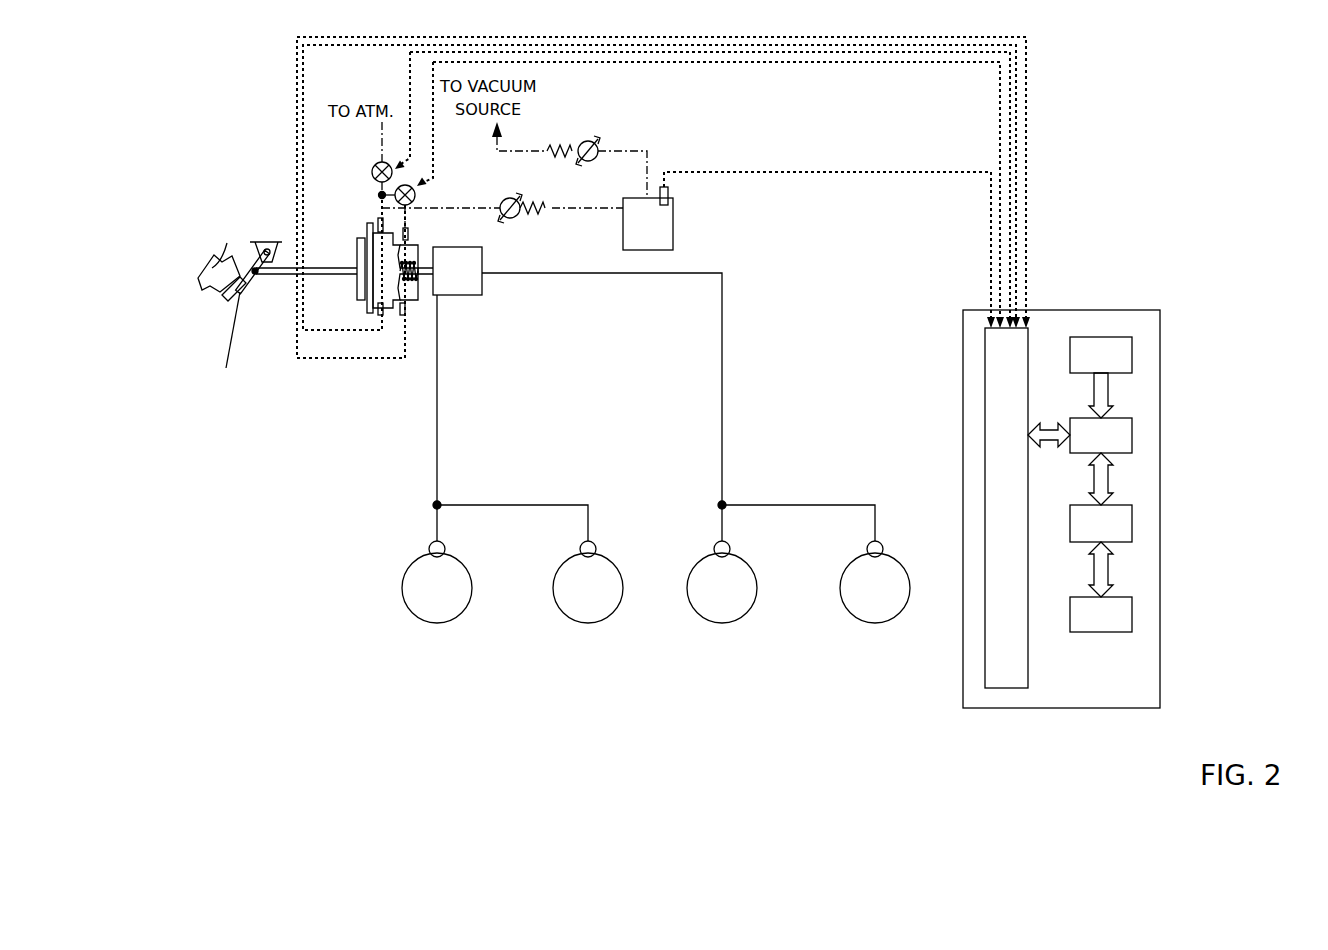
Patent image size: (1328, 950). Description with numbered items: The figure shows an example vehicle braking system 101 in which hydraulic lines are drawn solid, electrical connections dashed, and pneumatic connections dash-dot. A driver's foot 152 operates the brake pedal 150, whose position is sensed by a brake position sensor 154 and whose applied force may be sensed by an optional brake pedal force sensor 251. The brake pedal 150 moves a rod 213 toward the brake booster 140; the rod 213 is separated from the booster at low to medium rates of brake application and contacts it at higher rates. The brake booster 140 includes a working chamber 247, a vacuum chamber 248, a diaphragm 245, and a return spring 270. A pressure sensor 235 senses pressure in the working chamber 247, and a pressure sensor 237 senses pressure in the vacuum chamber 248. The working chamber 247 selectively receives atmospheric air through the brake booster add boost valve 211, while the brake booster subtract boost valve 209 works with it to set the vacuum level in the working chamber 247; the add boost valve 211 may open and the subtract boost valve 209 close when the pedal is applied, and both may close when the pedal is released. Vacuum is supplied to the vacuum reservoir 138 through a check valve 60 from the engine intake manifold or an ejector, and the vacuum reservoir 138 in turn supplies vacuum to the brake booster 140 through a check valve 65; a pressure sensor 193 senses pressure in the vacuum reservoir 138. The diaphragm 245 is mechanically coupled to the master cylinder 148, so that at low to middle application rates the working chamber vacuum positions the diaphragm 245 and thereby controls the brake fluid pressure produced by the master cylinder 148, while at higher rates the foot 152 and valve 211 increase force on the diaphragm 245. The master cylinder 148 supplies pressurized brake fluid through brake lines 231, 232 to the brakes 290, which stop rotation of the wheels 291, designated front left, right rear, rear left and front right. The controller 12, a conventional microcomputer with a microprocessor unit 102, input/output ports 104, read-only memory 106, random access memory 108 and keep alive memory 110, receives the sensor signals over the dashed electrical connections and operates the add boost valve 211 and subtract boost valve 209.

The braking system 101 is at (1088, 96).
The controller 12 is at (1150, 310).
The input/output ports 104 is at (1028, 336).
The read-only memory 106 is at (1132, 352).
The microprocessor unit 102 is at (1132, 432).
The random access memory 108 is at (1132, 522).
The keep alive memory 110 is at (1132, 612).
The foot 152 is at (210, 270).
The brake position sensor 154 is at (258, 252).
The brake pedal 150 is at (240, 298).
The brake pedal force sensor 251 is at (217, 340).
The rod 213 is at (340, 266).
The brake booster 140 is at (357, 290).
The pressure sensor 235 is at (370, 312).
The working chamber 247 is at (378, 242).
The diaphragm 245 is at (408, 245).
The vacuum chamber 248 is at (418, 262).
The pressure sensor 237 is at (400, 318).
The return spring 270 is at (404, 312).
The master cylinder 148 is at (455, 295).
The brake line 232 is at (505, 275).
The brake line 231 is at (437, 362).
The brake booster add boost valve 211 is at (372, 167).
The brake booster subtract boost valve 209 is at (414, 188).
The check valve 60 is at (583, 162).
The check valve 65 is at (512, 218).
The vacuum reservoir 138 is at (623, 242).
The pressure sensor 193 is at (668, 190).
The brakes 290 is at (430, 544).
The wheels 291 is at (407, 608).